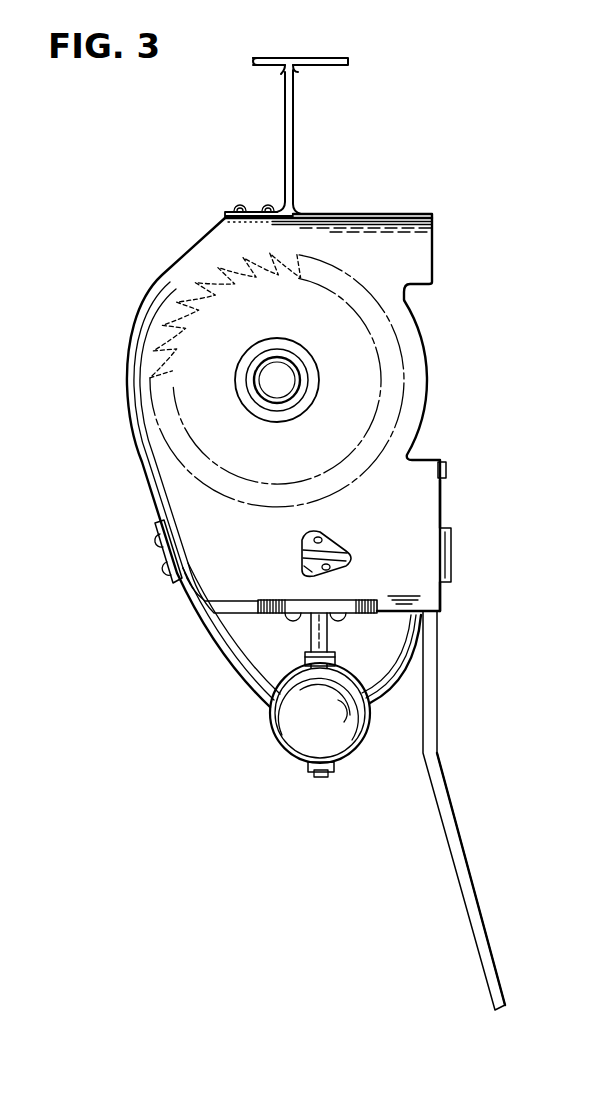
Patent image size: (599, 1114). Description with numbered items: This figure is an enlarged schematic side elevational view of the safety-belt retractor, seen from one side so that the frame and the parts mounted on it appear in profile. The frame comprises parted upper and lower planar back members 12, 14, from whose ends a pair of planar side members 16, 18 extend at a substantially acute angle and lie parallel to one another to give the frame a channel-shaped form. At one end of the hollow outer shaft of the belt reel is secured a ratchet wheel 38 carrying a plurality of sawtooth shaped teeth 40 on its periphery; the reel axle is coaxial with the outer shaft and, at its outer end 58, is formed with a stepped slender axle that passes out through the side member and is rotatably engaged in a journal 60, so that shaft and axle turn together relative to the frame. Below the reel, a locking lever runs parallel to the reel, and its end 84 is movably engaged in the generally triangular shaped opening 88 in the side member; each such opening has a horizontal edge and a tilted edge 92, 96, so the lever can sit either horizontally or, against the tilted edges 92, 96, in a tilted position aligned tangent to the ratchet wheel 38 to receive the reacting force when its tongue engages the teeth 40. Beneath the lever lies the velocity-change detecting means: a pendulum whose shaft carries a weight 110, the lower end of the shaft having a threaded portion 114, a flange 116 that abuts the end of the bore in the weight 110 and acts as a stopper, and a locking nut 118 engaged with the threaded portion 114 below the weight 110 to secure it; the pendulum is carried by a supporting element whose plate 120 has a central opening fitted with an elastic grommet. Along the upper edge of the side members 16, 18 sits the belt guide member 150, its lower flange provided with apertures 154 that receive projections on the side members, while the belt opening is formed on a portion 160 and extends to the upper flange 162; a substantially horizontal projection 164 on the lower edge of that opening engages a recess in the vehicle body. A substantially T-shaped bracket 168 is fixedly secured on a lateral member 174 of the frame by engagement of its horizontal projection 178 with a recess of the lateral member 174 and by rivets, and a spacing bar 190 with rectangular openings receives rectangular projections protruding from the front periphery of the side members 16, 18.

The upper planar back member 12 is at (428, 258).
The lower planar back member 14 is at (432, 502).
The side member 16 is at (243, 657).
The side member 18 is at (172, 470).
The ratchet wheel 38 is at (365, 338).
The sawtooth shaped teeth 40 is at (150, 396).
The outer end of reel axle 58 is at (282, 388).
The journal 60 is at (306, 372).
The end of locking lever 84 is at (302, 548).
The triangular shaped opening 88 is at (308, 563).
The tilted edge 92 is at (328, 564).
The tilted edge 96 is at (325, 540).
The weight 110 is at (300, 720).
The threaded portion 114 is at (332, 770).
The flange 116 is at (334, 660).
The locking nut 118 is at (313, 775).
The plate 120 is at (293, 608).
The belt guide member 150 is at (324, 107).
The apertures 154 is at (257, 210).
The portion of belt guide 160 is at (297, 138).
The upper flange 162 is at (320, 60).
The horizontal projection 164 is at (270, 60).
The T-shaped bracket 168 is at (430, 724).
The lateral member 174 is at (447, 550).
The horizontal projection of bracket 178 is at (443, 470).
The spacing bar 190 is at (165, 552).